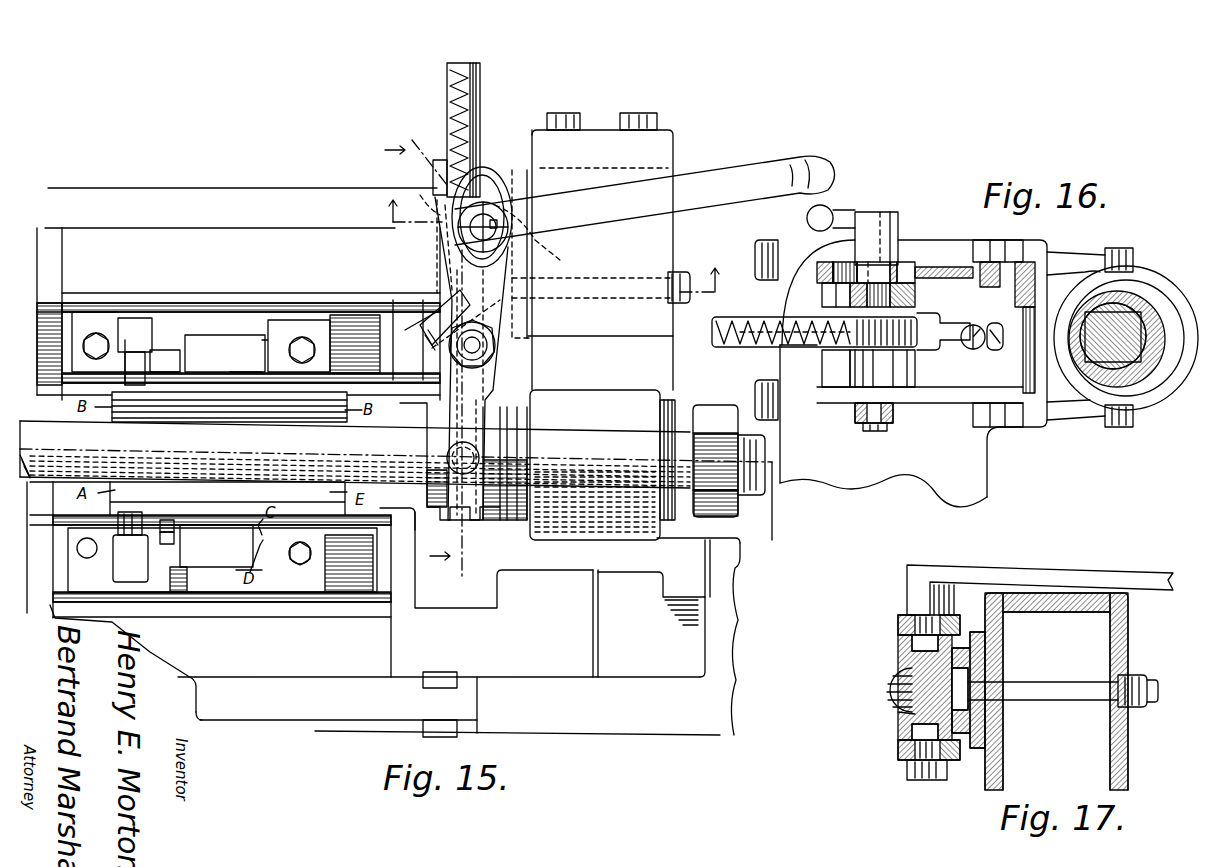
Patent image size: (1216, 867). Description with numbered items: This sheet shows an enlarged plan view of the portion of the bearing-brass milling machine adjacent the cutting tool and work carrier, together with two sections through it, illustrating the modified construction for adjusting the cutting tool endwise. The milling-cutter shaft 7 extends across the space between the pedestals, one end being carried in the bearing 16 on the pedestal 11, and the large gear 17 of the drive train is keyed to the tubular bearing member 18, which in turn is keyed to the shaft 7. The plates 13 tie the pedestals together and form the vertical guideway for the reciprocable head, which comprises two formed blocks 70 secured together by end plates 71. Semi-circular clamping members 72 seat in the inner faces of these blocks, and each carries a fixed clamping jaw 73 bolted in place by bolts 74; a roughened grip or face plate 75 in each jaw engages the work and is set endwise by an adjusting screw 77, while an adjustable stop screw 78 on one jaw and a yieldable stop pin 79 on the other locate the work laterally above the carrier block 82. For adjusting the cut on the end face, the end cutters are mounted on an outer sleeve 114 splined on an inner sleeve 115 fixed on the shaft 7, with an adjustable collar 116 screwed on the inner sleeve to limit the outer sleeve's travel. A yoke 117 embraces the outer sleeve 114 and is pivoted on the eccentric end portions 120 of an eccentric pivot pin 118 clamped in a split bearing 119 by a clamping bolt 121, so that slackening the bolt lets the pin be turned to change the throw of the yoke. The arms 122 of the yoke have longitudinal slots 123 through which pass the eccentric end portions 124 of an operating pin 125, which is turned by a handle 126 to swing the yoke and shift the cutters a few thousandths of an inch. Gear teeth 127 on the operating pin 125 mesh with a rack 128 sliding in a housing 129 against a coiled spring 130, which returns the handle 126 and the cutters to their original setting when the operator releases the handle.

In FIG. 15, the shaft 7 is at (752, 510).
In FIG. 16, the shaft 7 is at (1105, 370).
In FIG. 15, the pedestal 11 is at (617, 722).
In FIG. 15, the plates 13 is at (212, 197).
In FIG. 15, the bearing 16 is at (561, 354).
In FIG. 15, the large gear 17 is at (552, 250).
In FIG. 15, the tubular bearing member 18 is at (408, 582).
In FIG. 15, the formed blocks 70 is at (233, 452).
In FIG. 15, the end plates 71 is at (45, 328).
In FIG. 15, the clamping members 72 is at (232, 312).
In FIG. 15, the fixed clamping jaw 73 is at (222, 451).
In FIG. 15, the bolts 74 is at (302, 337).
In FIG. 15, the grip or face plate 75 is at (232, 372).
In FIG. 15, the adjusting screw 77 is at (158, 520).
In FIG. 15, the adjustable stop screw 78 is at (148, 548).
In FIG. 15, the yieldable stop pin 79 is at (134, 318).
In FIG. 15, the carrier block 82 is at (425, 520).
In FIG. 15, the outer sleeve 114 is at (440, 442).
In FIG. 16, the outer sleeve 114 is at (1145, 300).
In FIG. 16, the inner sleeve 115 is at (1160, 395).
In FIG. 15, the adjustable collar 116 is at (490, 515).
In FIG. 15, the yoke 117 is at (504, 384).
In FIG. 16, the yoke 117 is at (1080, 255).
In FIG. 15, the eccentric pivot pin 118 is at (490, 347).
In FIG. 16, the eccentric pivot pin 118 is at (1005, 320).
In FIG. 15, the split bearing 119 is at (440, 310).
In FIG. 16, the split bearing 119 is at (935, 395).
In FIG. 16, the eccentric end portions 120 is at (968, 260).
In FIG. 15, the clamping bolt 121 is at (460, 335).
In FIG. 16, the clamping bolt 121 is at (965, 355).
In FIG. 15, the arms of the yoke 122 is at (440, 285).
In FIG. 16, the arms of the yoke 122 is at (930, 265).
In FIG. 17, the arms of the yoke 122 is at (900, 616).
In FIG. 15, the longitudinal slots 123 is at (495, 180).
In FIG. 16, the longitudinal slots 123 is at (905, 267).
In FIG. 15, the end portions of operating pin 124 is at (500, 240).
In FIG. 16, the end portions of operating pin 124 is at (878, 273).
In FIG. 17, the end portions of operating pin 124 is at (925, 624).
In FIG. 15, the operating pin 125 is at (734, 301).
In FIG. 16, the operating pin 125 is at (880, 293).
In FIG. 17, the operating pin 125 is at (910, 663).
In FIG. 15, the handle 126 is at (645, 251).
In FIG. 16, the handle 126 is at (860, 207).
In FIG. 17, the handle 126 is at (1060, 574).
In FIG. 15, the gear teeth 127 is at (543, 234).
In FIG. 17, the gear teeth 127 is at (905, 712).
In FIG. 15, the rack 128 is at (428, 195).
In FIG. 16, the rack 128 is at (925, 325).
In FIG. 17, the rack 128 is at (890, 692).
In FIG. 15, the housing or way 129 is at (480, 105).
In FIG. 16, the housing or way 129 is at (756, 350).
In FIG. 15, the coiled spring 130 is at (447, 92).
In FIG. 16, the coiled spring 130 is at (745, 348).